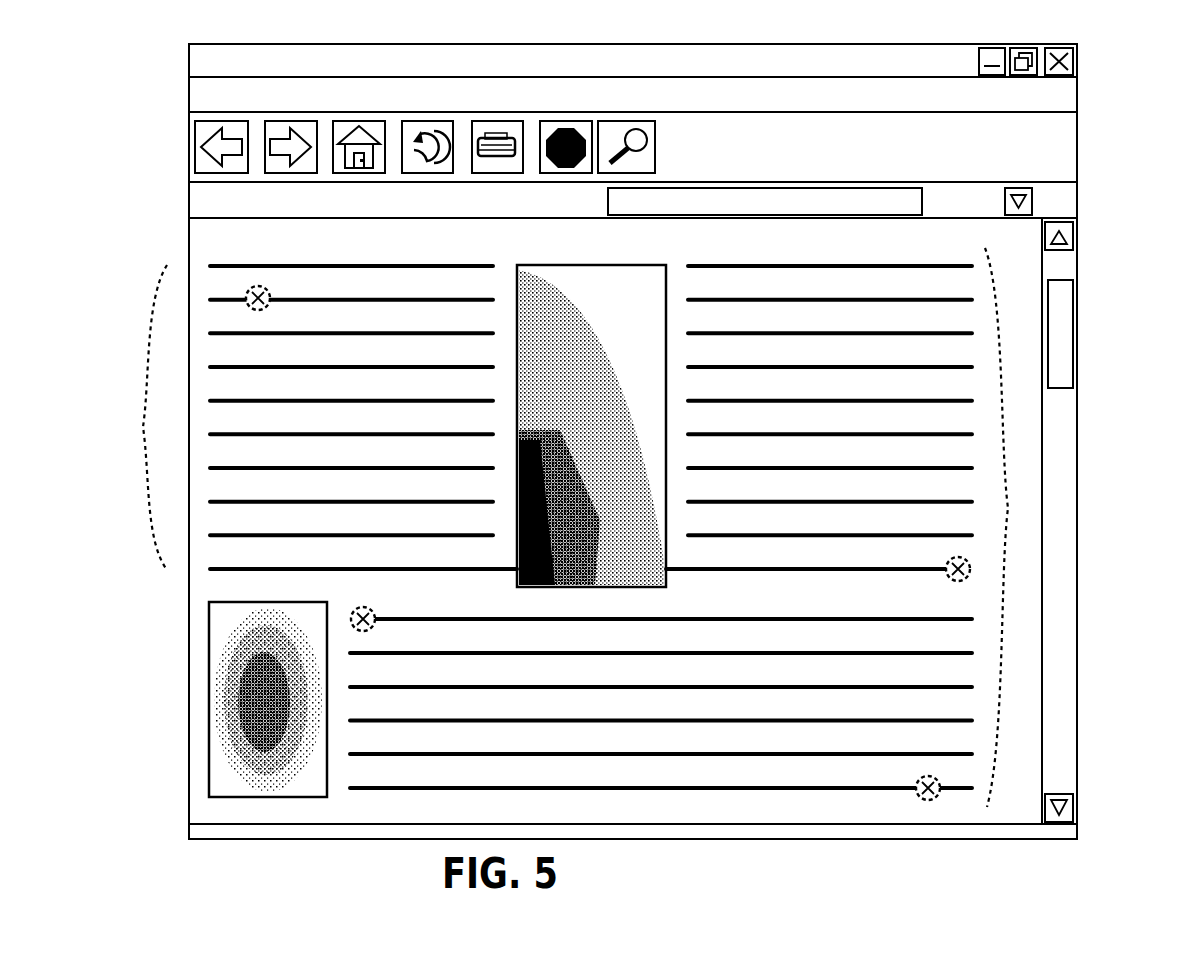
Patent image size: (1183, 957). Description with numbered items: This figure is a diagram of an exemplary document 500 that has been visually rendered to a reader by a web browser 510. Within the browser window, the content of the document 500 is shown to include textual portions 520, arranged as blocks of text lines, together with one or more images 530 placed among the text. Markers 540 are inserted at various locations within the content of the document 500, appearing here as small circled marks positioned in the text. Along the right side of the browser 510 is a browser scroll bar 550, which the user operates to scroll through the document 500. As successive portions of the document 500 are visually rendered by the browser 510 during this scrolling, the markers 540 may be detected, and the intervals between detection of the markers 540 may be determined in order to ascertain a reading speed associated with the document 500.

The document 500 is at (609, 469).
The web browser 510 is at (184, 95).
The textual portions 520 is at (132, 427).
The images 530 is at (591, 426).
The markers 540 is at (272, 325).
The browser scroll bar 550 is at (1072, 334).